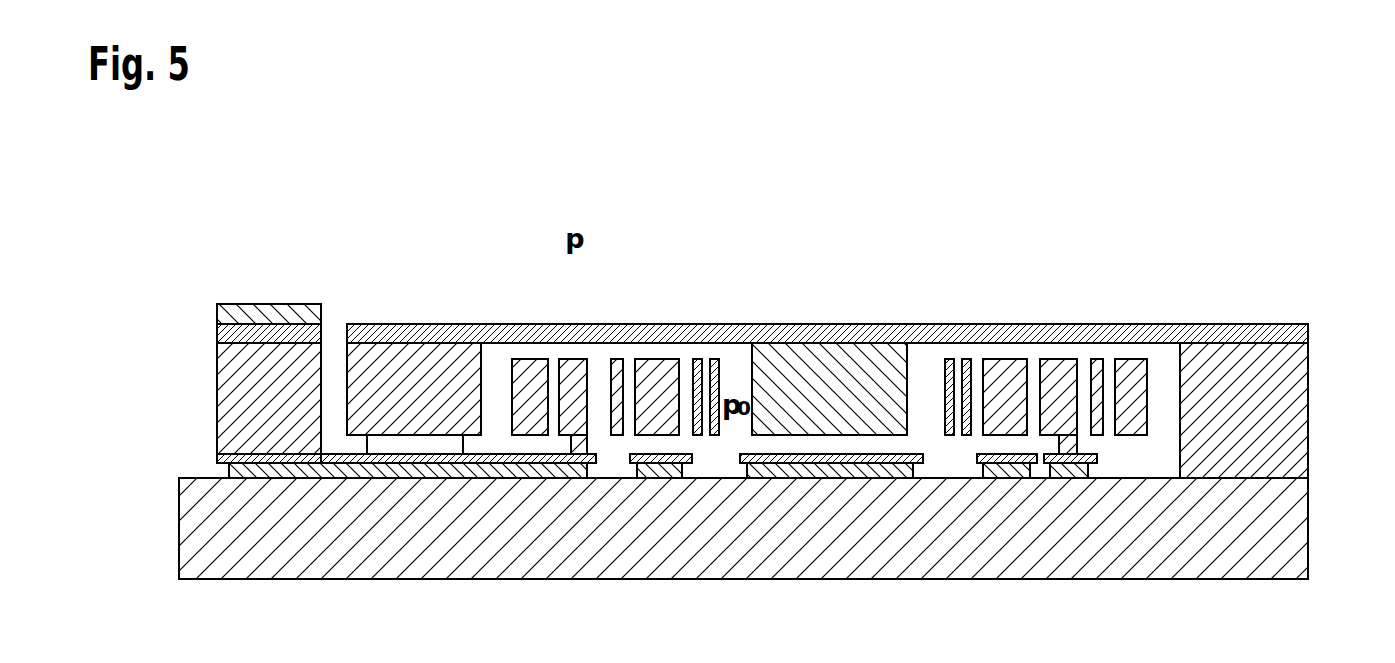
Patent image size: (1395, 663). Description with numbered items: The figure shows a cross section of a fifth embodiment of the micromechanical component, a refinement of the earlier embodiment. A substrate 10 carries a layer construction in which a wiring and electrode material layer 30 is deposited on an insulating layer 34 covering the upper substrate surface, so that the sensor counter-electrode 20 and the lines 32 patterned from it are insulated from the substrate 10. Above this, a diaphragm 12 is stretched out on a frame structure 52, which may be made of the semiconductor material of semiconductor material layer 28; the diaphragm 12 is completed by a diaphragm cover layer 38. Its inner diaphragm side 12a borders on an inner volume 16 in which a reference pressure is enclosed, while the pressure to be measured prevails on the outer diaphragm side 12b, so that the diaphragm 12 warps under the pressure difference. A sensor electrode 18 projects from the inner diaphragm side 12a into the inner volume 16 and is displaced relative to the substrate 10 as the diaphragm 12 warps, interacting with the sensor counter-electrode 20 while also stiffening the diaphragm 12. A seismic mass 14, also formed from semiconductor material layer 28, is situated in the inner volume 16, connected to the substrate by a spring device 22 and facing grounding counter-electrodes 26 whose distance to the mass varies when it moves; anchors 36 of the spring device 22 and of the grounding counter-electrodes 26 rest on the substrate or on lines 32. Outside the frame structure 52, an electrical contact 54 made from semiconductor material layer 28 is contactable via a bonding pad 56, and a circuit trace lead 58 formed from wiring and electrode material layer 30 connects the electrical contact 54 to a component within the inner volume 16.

The substrate 10 is at (188, 535).
The diaphragm 12 is at (1015, 337).
The inner diaphragm side 12a is at (1155, 353).
The outer diaphragm side 12b is at (1269, 321).
The seismic mass 14 is at (525, 365).
The inner volume 16 is at (928, 372).
The sensor electrode 18 is at (829, 370).
The sensor counter-electrode 20 is at (855, 460).
The spring device 22 is at (713, 365).
The grounding counter-electrode 26 is at (570, 363).
The semiconductor material layer 28 is at (100, 360).
The wiring and electrode material layer 30 is at (98, 449).
The lines 32 is at (648, 463).
The insulating layer 34 is at (262, 470).
The anchors 36 is at (1077, 448).
The diaphragm cover layer 38 is at (98, 326).
The frame structure 52 is at (405, 367).
The electrical contact 54 is at (210, 386).
The bonding pad 56 is at (250, 318).
The circuit trace lead 58 is at (345, 463).